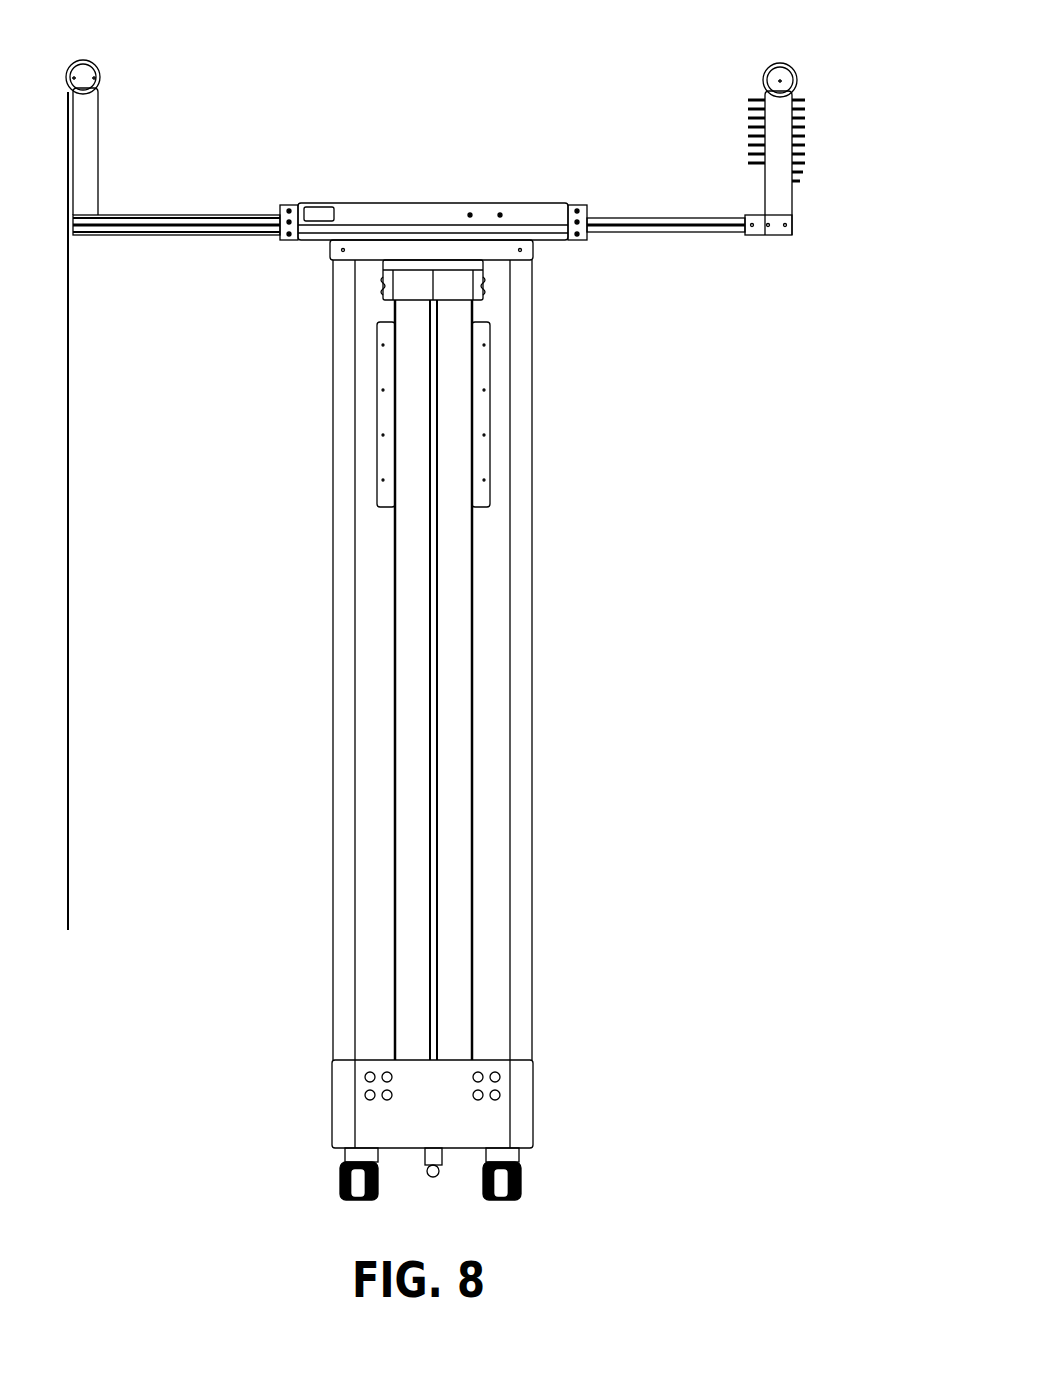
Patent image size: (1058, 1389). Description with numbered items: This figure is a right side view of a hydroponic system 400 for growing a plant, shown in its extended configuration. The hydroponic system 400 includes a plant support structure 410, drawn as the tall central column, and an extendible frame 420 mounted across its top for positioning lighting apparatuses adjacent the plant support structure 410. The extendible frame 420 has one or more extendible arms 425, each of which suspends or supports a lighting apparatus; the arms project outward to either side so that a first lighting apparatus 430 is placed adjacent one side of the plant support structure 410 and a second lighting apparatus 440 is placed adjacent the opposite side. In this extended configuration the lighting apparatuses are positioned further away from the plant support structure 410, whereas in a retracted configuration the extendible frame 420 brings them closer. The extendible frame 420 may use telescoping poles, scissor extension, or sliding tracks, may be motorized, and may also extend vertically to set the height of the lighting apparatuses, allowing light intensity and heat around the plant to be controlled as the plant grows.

The hydroponic system 400 is at (622, 64).
The plant support structure 410 is at (488, 707).
The extendible frame 420 is at (570, 238).
The extendible arm 425 is at (82, 158).
The first lighting apparatus 430 is at (752, 107).
The second lighting apparatus 440 is at (70, 775).